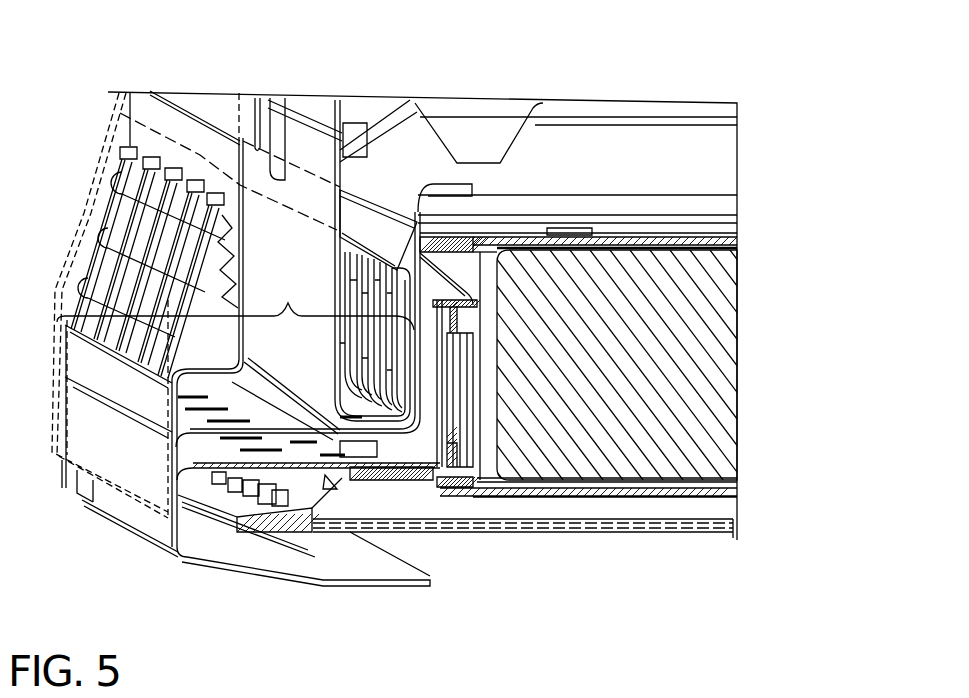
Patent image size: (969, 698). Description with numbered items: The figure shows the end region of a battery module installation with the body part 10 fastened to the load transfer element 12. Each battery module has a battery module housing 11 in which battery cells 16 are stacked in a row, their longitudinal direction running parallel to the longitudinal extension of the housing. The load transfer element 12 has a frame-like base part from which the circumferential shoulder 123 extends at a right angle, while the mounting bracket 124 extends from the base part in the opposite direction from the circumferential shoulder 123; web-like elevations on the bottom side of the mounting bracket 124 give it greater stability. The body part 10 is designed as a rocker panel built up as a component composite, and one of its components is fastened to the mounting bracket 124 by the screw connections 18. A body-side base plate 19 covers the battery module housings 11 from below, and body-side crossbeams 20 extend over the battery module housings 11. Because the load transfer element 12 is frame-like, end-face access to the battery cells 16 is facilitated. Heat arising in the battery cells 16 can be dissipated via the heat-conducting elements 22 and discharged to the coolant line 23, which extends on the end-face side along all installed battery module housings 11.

The body part 10 is at (288, 302).
The battery module housing 11 is at (487, 239).
The load transfer element 12 is at (370, 480).
The battery cells 16 is at (599, 279).
The screw connections 18 is at (357, 450).
The body-side base plate 19 is at (540, 508).
The body-side crossbeams 20 is at (690, 148).
The heat-conducting elements 22 is at (455, 278).
The coolant line 23 is at (163, 140).
The circumferential shoulder 123 is at (434, 243).
The mounting bracket 124 is at (400, 472).